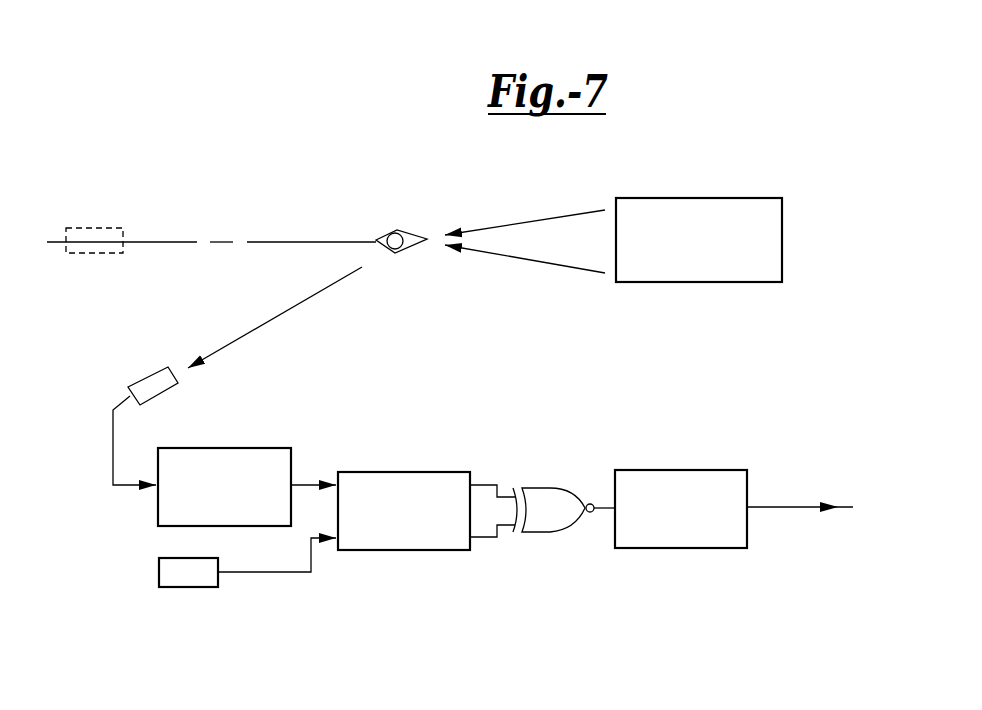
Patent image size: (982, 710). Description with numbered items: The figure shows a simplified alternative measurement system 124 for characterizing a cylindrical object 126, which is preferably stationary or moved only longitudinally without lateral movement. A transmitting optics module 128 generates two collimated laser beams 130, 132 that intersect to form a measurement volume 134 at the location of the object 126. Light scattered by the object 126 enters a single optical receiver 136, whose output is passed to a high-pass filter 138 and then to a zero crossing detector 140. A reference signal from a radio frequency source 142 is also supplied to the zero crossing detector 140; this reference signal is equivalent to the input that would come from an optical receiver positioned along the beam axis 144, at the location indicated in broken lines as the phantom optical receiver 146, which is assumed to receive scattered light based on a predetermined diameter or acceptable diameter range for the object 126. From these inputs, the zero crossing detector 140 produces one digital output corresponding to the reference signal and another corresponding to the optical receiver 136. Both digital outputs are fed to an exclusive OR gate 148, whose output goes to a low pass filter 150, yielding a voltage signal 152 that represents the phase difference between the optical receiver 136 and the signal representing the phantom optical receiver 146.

The measurement system 124 is at (313, 187).
The cylindrical object 126 is at (412, 229).
The transmitting optics module 128 is at (677, 198).
The collimated laser beam 130 is at (537, 219).
The collimated laser beam 132 is at (523, 262).
The measurement volume 134 is at (403, 248).
The optical receiver 136 is at (142, 378).
The high-pass filter 138 is at (260, 448).
The zero crossing detector 140 is at (422, 472).
The radio frequency source 142 is at (200, 587).
The beam axis 144 is at (257, 241).
The phantom optical receiver 146 is at (95, 228).
The exclusive OR gate 148 is at (548, 488).
The low pass filter 150 is at (695, 470).
The voltage signal 152 is at (787, 507).